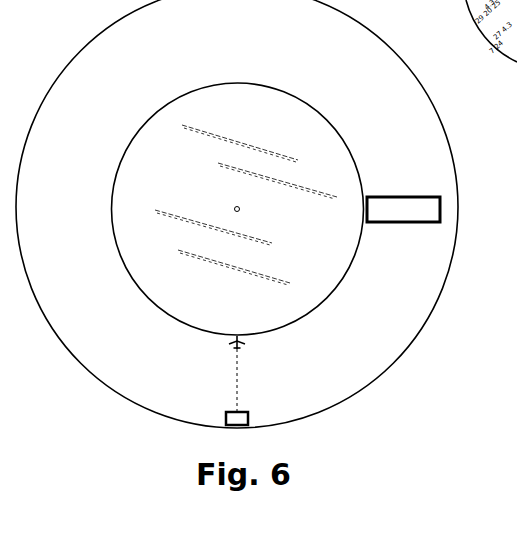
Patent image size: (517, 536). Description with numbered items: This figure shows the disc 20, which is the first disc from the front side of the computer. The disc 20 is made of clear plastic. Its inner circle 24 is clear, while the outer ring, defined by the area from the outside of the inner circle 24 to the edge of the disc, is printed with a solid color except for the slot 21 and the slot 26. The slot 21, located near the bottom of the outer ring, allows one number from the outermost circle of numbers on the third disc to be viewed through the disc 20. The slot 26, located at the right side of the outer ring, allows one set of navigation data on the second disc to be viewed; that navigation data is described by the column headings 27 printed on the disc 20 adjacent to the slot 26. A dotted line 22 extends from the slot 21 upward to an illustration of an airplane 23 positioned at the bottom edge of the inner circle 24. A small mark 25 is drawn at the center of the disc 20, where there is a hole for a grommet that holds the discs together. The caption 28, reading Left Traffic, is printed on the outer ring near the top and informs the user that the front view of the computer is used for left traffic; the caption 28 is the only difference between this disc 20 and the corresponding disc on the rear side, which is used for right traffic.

The disc 20 is at (297, 68).
The slot 21 is at (249, 416).
The dotted line 22 is at (240, 381).
The airplane illustration 23 is at (231, 344).
The inner circle 24 is at (348, 266).
The center point marker 25 is at (240, 209).
The slot 26 is at (404, 216).
The column headings 27 is at (410, 166).
The caption 28 is at (205, 32).